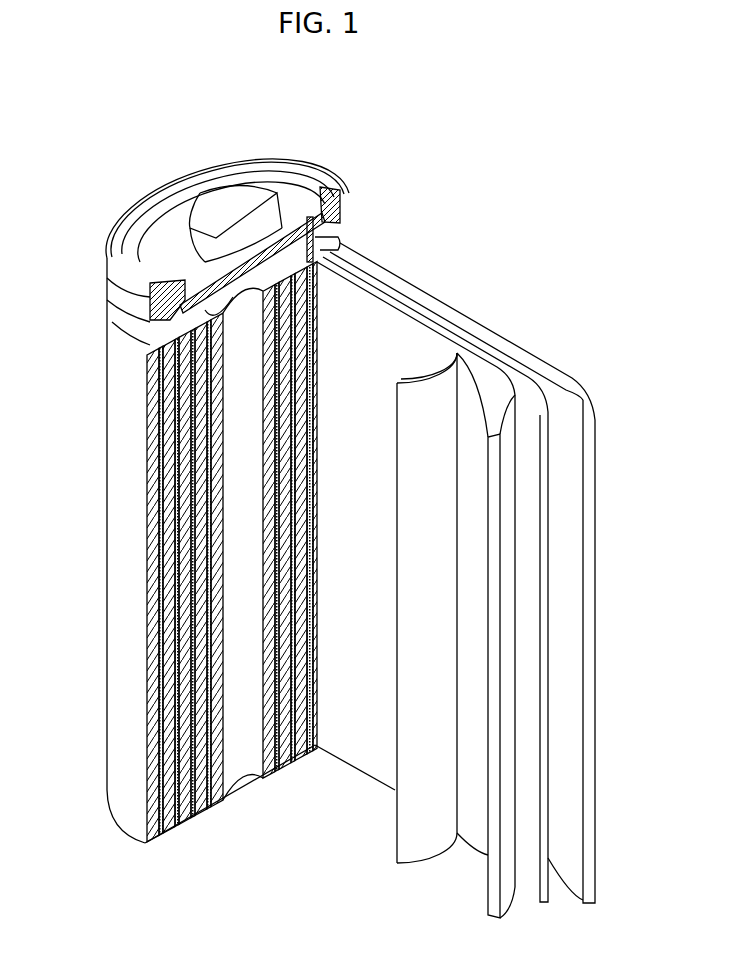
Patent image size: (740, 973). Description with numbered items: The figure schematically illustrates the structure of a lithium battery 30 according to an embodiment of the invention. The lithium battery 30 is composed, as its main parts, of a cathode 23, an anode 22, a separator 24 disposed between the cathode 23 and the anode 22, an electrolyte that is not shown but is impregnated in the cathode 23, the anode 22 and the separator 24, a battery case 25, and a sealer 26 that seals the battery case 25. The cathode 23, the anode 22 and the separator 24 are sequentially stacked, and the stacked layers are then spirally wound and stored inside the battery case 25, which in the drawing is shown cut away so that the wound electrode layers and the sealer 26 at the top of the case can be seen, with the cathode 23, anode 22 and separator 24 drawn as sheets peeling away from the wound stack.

The lithium battery 30 is at (304, 109).
The sealer 26 is at (218, 205).
The battery case 25 is at (115, 545).
The separator 24 is at (430, 383).
The cathode 23 is at (505, 392).
The anode 22 is at (575, 393).